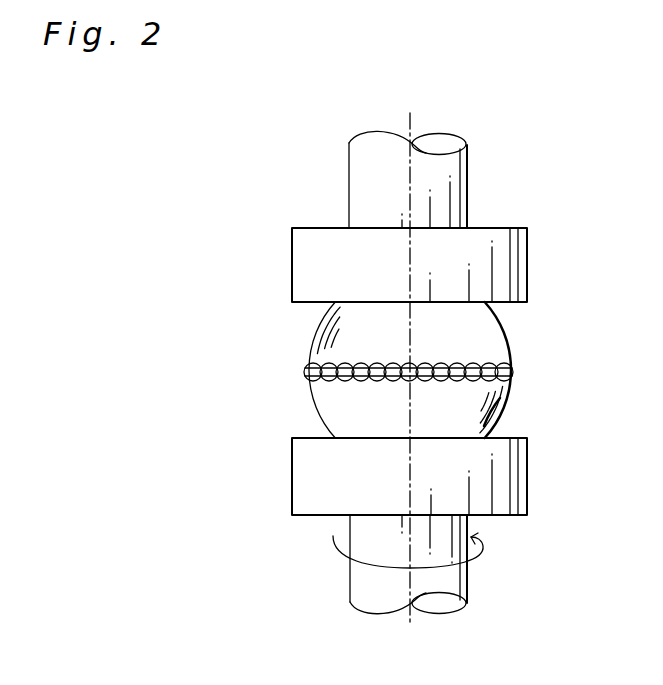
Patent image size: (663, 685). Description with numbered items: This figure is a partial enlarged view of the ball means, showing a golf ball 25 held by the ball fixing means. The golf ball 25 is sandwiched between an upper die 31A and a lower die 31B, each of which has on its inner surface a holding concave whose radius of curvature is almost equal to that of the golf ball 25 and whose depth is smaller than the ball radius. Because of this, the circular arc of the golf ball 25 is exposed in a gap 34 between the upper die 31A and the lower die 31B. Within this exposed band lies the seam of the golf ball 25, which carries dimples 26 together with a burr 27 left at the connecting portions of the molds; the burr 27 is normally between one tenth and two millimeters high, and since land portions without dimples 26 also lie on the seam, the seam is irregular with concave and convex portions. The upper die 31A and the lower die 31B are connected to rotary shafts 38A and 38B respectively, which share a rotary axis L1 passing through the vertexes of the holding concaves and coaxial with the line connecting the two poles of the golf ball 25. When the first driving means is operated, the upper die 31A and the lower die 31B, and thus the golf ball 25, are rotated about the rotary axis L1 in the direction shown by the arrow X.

The rotary axis L1 is at (410, 122).
The rotary shaft 38A is at (468, 174).
The rotary shaft 38B is at (466, 576).
The upper die 31A is at (300, 267).
The lower die 31B is at (298, 487).
The gap 34 is at (506, 333).
The dimples 26 is at (345, 365).
The burr 27 is at (305, 372).
The golf ball 25 is at (503, 403).
The direction of rotation X is at (419, 547).